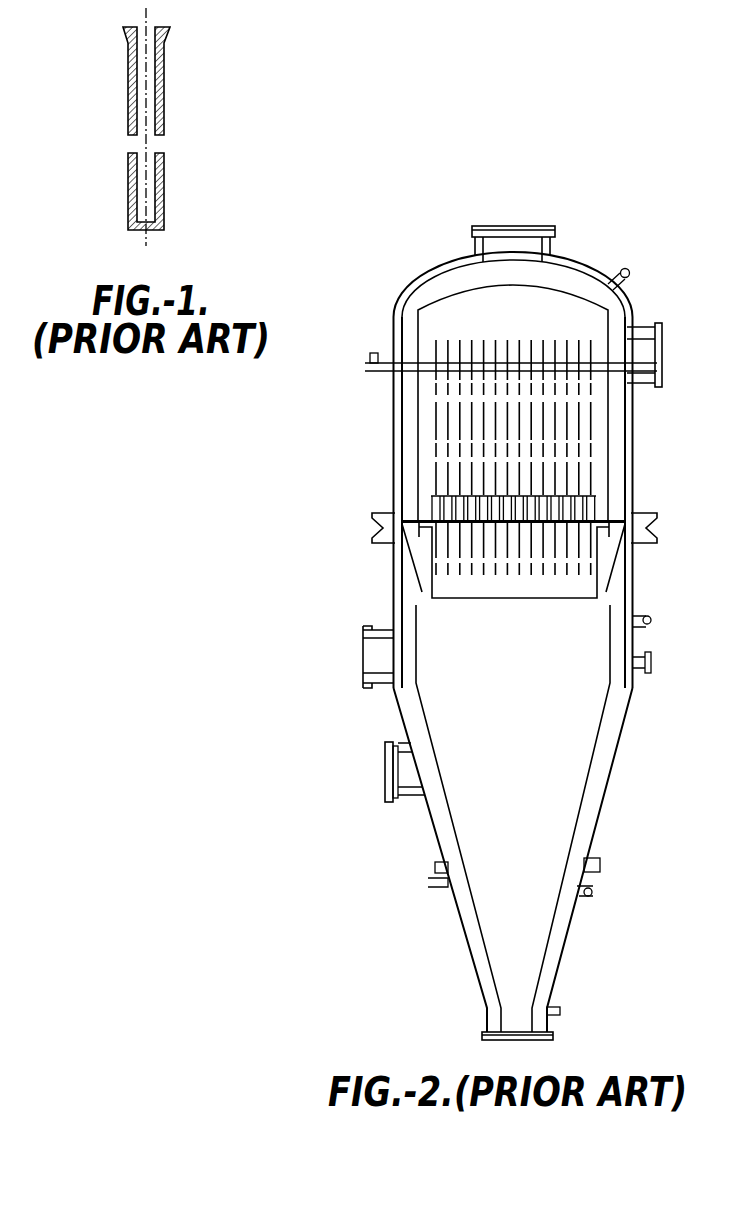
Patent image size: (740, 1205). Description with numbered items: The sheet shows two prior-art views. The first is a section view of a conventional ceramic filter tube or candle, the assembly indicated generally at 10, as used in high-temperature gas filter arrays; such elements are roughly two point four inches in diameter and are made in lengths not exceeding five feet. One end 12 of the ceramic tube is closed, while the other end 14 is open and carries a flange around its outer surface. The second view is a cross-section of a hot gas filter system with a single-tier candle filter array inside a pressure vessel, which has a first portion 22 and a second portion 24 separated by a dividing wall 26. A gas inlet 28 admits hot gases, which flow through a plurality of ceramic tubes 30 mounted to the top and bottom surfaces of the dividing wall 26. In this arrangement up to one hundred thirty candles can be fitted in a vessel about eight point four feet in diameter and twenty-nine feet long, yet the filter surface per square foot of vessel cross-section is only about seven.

In FIG. 1, the prior art tube assembly 10 is at (186, 132).
In FIG. 1, the closed end 12 is at (155, 232).
In FIG. 1, the open end 14 is at (171, 30).
In FIG. 2, the first portion 22 is at (548, 715).
In FIG. 2, the second portion 24 is at (565, 326).
In FIG. 2, the dividing wall 26 is at (605, 522).
In FIG. 2, the gas inlet 28 is at (363, 656).
In FIG. 2, the ceramic tubes 30 is at (474, 336).